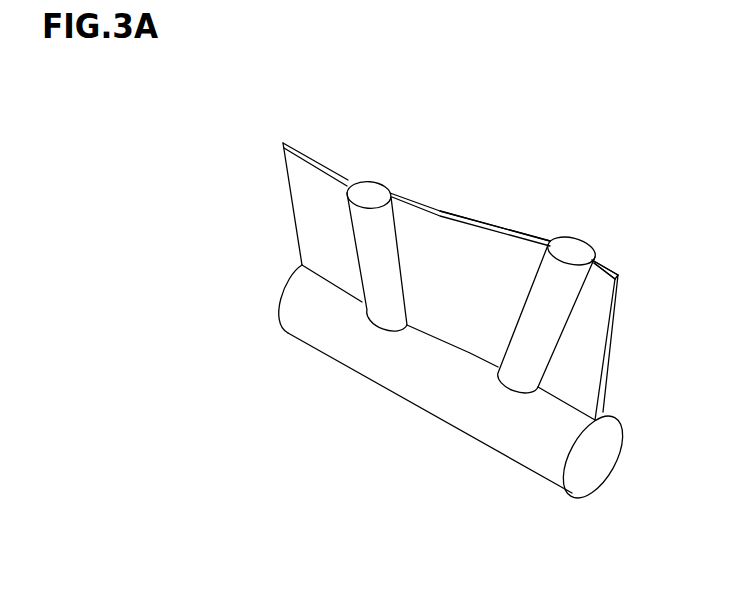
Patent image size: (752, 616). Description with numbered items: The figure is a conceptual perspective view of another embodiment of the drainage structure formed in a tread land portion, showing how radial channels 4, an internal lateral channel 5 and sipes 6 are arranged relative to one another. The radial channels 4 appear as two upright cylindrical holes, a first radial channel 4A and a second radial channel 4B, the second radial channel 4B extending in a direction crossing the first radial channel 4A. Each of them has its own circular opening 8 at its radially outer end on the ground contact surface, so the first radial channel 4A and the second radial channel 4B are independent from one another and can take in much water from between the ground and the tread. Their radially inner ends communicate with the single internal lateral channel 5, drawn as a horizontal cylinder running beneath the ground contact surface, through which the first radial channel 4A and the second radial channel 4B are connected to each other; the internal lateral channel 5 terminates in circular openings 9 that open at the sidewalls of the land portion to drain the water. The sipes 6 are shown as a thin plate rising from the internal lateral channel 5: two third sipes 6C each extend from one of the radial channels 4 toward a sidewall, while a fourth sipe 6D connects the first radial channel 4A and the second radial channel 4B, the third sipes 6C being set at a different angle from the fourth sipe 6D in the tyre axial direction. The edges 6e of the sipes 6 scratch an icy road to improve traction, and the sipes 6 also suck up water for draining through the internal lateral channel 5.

The radial channel 4 is at (565, 125).
The first radial channel 4A is at (548, 295).
The second radial channel 4B is at (377, 240).
The internal lateral channel 5 is at (428, 380).
The sipe 6 is at (320, 207).
The third sipe 6C is at (593, 307).
The fourth sipe 6D is at (475, 262).
The edge 6e is at (610, 263).
The opening 8 is at (362, 188).
The opening 9 is at (277, 293).